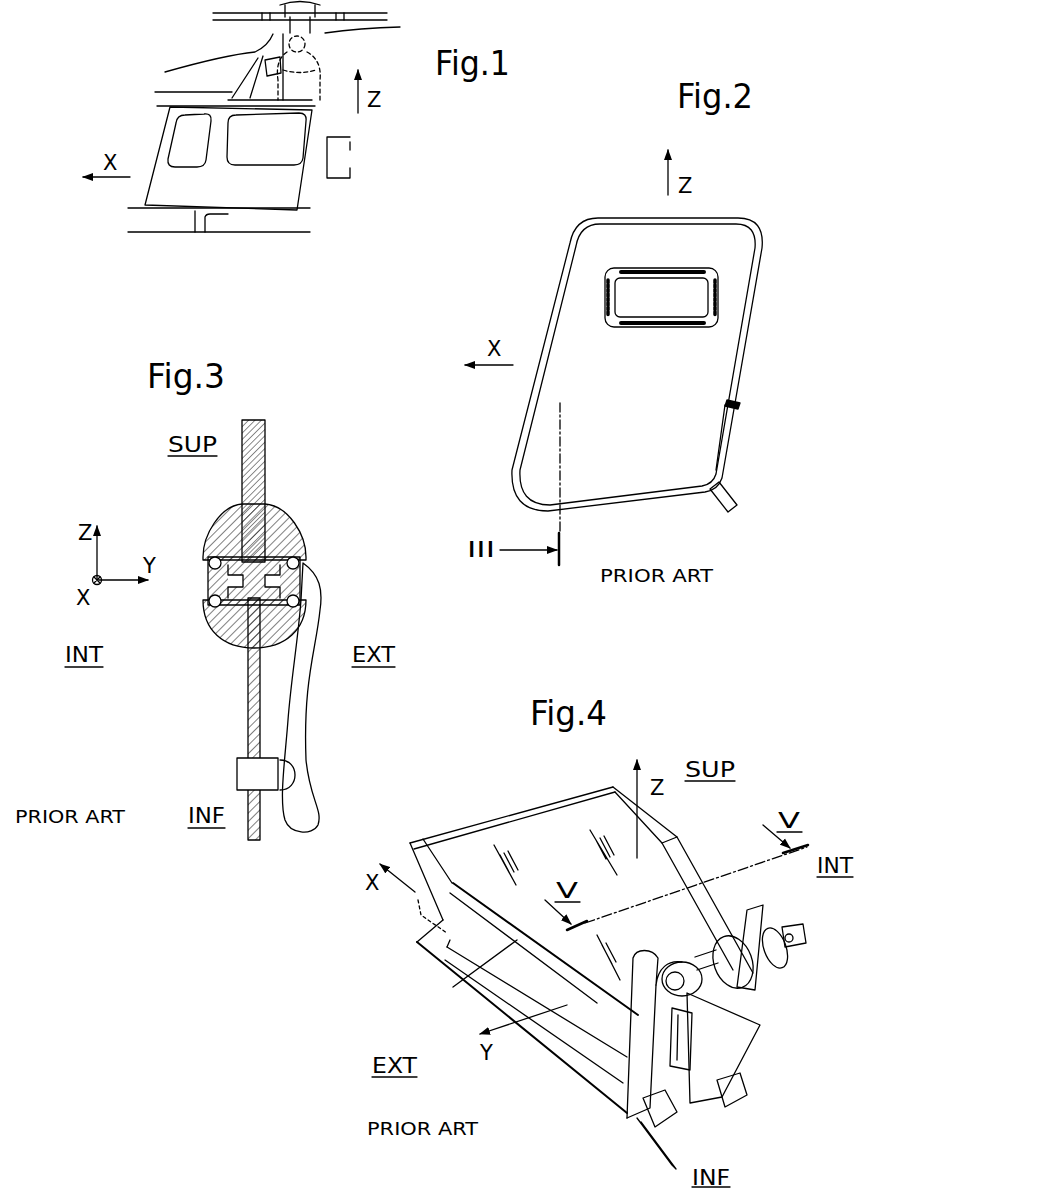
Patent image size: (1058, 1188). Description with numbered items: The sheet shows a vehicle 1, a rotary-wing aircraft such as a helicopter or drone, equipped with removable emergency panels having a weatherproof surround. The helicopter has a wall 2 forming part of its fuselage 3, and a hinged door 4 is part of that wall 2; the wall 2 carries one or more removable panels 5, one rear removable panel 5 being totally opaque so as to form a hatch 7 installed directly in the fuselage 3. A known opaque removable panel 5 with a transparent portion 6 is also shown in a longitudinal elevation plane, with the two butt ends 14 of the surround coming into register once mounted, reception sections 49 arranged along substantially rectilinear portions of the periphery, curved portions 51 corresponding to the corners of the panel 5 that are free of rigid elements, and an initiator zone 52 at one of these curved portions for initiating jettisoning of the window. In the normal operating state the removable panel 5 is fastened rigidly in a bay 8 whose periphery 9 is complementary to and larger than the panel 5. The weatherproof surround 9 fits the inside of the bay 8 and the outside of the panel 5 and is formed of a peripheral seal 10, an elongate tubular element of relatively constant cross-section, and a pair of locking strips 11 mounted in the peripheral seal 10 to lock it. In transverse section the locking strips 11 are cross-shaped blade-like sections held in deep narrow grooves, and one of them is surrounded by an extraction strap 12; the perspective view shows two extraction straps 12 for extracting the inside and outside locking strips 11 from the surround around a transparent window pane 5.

In FIG. 1, the vehicle 1 is at (266, 139).
In FIG. 2, the vehicle 1 is at (657, 339).
In FIG. 3, the vehicle 1 is at (231, 719).
In FIG. 4, the vehicle 1 is at (580, 965).
In FIG. 1, the wall 2 is at (266, 139).
In FIG. 2, the wall 2 is at (657, 339).
In FIG. 3, the wall 2 is at (231, 719).
In FIG. 4, the wall 2 is at (580, 965).
In FIG. 1, the fuselage 3 is at (266, 139).
In FIG. 2, the fuselage 3 is at (657, 339).
In FIG. 3, the fuselage 3 is at (249, 713).
In FIG. 4, the fuselage 3 is at (580, 965).
In FIG. 1, the hinged door 4 is at (303, 180).
In FIG. 2, the hinged door 4 is at (657, 339).
In FIG. 1, the removable panel 5 is at (266, 159).
In FIG. 2, the removable panel 5 is at (737, 404).
In FIG. 3, the removable panel 5 is at (258, 460).
In FIG. 4, the removable panel 5 is at (558, 824).
In FIG. 2, the transparent portion 6 is at (653, 310).
In FIG. 1, the hatch 7 is at (352, 160).
In FIG. 1, the bay 8 is at (250, 168).
In FIG. 2, the bay 8 is at (658, 357).
In FIG. 4, the bay 8 is at (550, 937).
In FIG. 1, the weatherproof surround 9 is at (254, 159).
In FIG. 2, the weatherproof surround 9 is at (577, 228).
In FIG. 3, the weatherproof surround 9 is at (250, 548).
In FIG. 4, the weatherproof surround 9 is at (550, 937).
In FIG. 3, the peripheral seal 10 is at (248, 576).
In FIG. 4, the peripheral seal 10 is at (630, 1031).
In FIG. 3, the locking strips 11 is at (302, 575).
In FIG. 4, the locking strips 11 is at (667, 1113).
In FIG. 2, the extraction strap 12 is at (738, 488).
In FIG. 3, the extraction strap 12 is at (311, 716).
In FIG. 4, the extraction strap 12 is at (750, 912).
In FIG. 2, the butt ends 14 is at (653, 310).
In FIG. 2, the reception sections 49 is at (607, 302).
In FIG. 2, the curved portions 51 is at (608, 272).
In FIG. 2, the initiator zone 52 is at (653, 310).